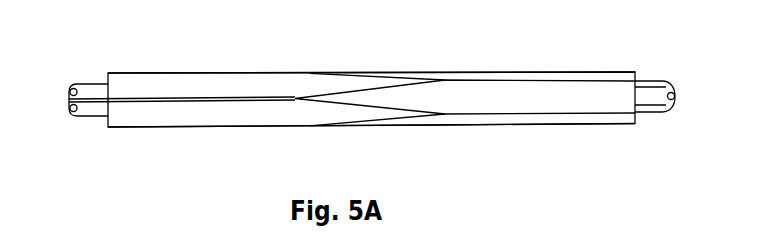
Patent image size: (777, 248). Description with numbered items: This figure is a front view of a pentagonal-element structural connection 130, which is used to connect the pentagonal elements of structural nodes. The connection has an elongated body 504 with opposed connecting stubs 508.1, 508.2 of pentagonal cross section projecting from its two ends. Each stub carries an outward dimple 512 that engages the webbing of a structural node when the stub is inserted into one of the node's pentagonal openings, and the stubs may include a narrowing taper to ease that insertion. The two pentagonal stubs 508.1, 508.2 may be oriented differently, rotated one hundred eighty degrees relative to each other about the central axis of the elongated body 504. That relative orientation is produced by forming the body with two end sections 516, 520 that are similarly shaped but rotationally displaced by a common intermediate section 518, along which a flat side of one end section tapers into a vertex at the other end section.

The pentagonal-element structural connection 130 is at (195, 71).
The elongated body 504 is at (348, 71).
The pentagonal stub 508.1 is at (89, 82).
The pentagonal stub 508.2 is at (656, 79).
The outward dimple 512 is at (69, 108).
The end section 516 is at (193, 128).
The intermediate section 518 is at (372, 126).
The end section 520 is at (542, 124).